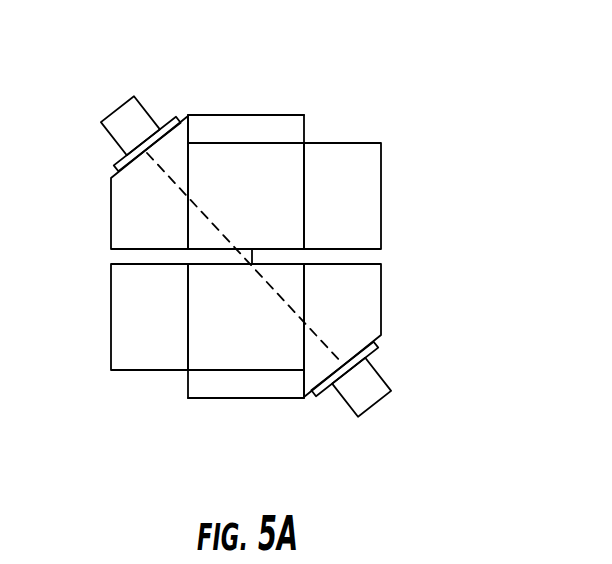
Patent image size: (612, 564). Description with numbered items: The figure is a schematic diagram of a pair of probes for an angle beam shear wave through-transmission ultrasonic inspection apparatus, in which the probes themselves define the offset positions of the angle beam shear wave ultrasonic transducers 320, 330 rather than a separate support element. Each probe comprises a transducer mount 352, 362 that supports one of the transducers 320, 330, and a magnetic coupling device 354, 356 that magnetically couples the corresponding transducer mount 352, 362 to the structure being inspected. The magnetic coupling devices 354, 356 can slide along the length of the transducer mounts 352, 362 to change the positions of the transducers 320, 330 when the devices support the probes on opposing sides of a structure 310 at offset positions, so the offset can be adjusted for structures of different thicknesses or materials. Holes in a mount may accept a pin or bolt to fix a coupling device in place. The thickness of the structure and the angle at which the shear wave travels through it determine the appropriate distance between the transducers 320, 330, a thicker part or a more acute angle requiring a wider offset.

The weld joint / beam path 310 is at (276, 257).
The angle beam shear wave ultrasonic transducer 320 is at (123, 123).
The angle beam shear wave ultrasonic transducer 330 is at (370, 395).
The transducer mount 352 is at (335, 192).
The magnetic coupling device 354 is at (277, 197).
The magnetic coupling device 356 is at (287, 127).
The transducer mount 362 is at (167, 322).